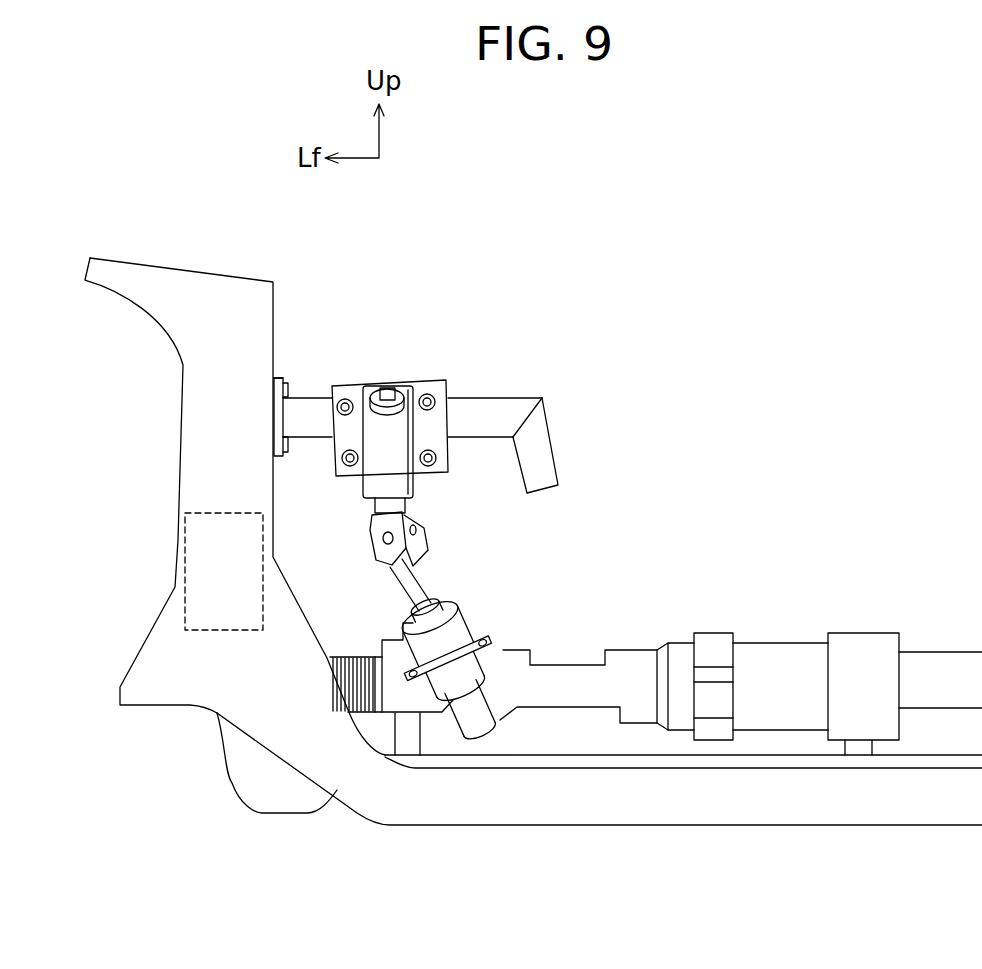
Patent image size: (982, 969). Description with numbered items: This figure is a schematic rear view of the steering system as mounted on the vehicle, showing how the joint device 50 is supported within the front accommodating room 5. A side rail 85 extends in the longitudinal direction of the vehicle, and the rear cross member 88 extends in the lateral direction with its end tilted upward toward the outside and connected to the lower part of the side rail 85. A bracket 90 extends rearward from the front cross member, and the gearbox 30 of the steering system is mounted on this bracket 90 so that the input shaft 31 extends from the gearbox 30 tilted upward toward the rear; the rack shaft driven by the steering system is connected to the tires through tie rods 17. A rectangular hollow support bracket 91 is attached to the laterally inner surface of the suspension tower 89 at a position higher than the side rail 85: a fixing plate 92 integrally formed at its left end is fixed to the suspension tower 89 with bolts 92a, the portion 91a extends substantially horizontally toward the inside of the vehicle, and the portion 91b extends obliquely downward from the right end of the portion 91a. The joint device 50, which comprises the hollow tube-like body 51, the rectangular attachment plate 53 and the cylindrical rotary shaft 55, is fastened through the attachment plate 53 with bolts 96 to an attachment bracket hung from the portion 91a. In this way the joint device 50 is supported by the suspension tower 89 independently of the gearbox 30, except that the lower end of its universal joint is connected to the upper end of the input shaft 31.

The front accommodating room 5 is at (644, 369).
The tie rod 17 is at (345, 692).
The gearbox 30 is at (503, 643).
The input shaft 31 is at (420, 587).
The joint device 50 is at (426, 488).
The body 51 is at (368, 500).
The attachment plate 53 is at (443, 418).
The rotary shaft 55 is at (386, 380).
The side rail 85 is at (183, 560).
The rear cross member 88 is at (663, 800).
The suspension tower 89 is at (228, 300).
The bracket 90 is at (508, 762).
The support bracket 91 is at (312, 393).
The portion extending substantially horizontally 91a is at (502, 410).
The portion extending obliquely downward 91b is at (553, 447).
The fixing plate 92 is at (273, 415).
The bolt 92a is at (283, 388).
The bolt 96 is at (350, 470).